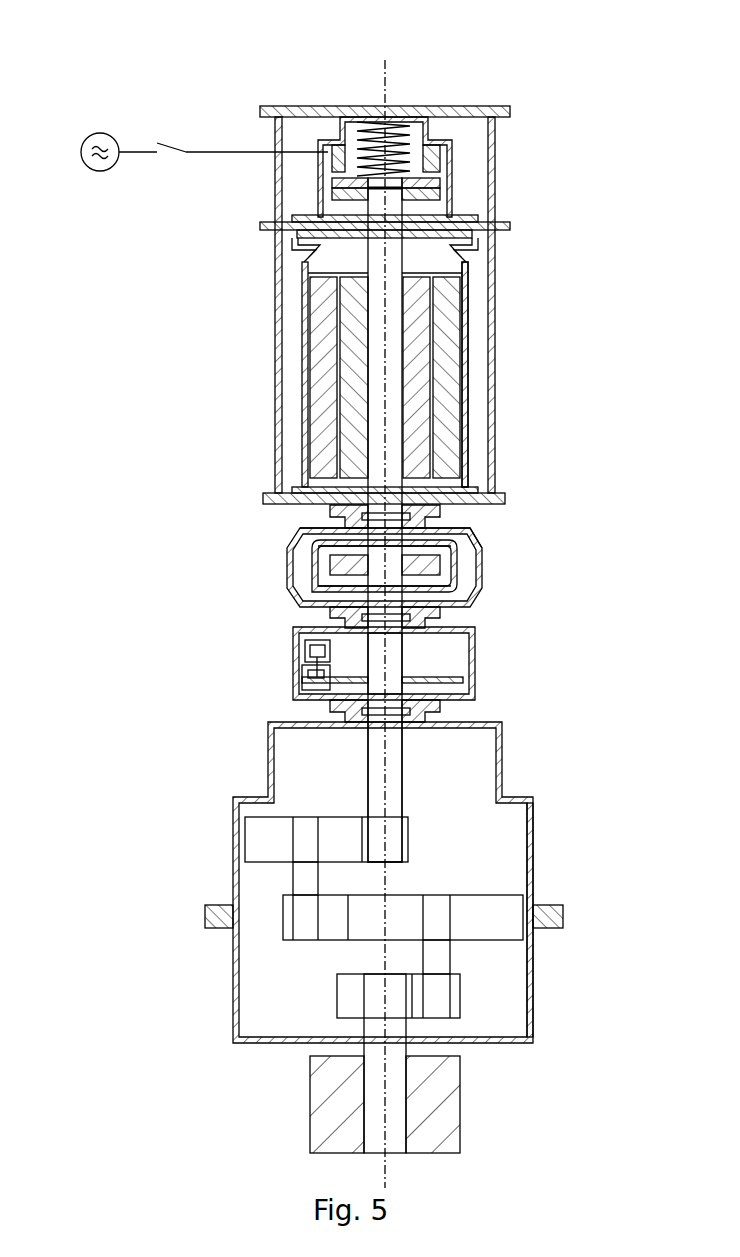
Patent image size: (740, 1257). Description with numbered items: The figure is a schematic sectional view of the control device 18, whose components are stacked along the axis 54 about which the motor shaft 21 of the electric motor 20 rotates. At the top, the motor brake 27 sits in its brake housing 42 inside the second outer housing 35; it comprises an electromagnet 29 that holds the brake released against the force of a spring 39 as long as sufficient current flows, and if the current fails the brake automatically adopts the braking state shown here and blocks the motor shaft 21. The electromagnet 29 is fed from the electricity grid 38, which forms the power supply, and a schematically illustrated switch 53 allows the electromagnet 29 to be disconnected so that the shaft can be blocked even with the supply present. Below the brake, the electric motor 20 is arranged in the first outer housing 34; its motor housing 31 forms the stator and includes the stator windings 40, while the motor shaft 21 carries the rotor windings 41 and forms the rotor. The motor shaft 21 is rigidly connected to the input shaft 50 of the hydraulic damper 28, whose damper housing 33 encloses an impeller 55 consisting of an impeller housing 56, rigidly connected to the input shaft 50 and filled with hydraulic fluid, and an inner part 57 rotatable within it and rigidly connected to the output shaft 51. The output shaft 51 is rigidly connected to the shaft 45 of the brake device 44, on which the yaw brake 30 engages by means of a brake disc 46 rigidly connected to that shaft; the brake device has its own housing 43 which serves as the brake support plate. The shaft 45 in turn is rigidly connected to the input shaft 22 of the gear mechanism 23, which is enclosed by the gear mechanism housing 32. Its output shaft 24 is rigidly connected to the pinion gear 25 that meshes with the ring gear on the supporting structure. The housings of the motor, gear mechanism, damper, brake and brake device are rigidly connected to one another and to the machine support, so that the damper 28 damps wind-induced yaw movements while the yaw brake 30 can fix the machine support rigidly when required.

The control device 18 is at (262, 68).
The electric motor 20 is at (468, 305).
The motor shaft 21 is at (393, 262).
The input shaft 22 is at (375, 752).
The gear mechanism 23 is at (538, 806).
The output shaft 24 is at (371, 1026).
The pinion gear 25 is at (452, 1102).
The motor brake 27 is at (467, 188).
The hydraulic damper 28 is at (487, 563).
The electromagnet 29 is at (340, 163).
The yaw brake 30 is at (456, 645).
The motor housing 31 is at (470, 410).
The gear mechanism housing 32 is at (535, 867).
The damper housing 33 is at (478, 530).
The first outer housing 34 is at (278, 340).
The second outer housing 35 is at (278, 200).
The electricity grid 38 is at (101, 172).
The spring 39 is at (362, 130).
The stator windings 40 is at (455, 447).
The rotor windings 41 is at (345, 443).
The brake housing 42 is at (450, 166).
The housing 43 is at (296, 638).
The brake device 44 is at (292, 672).
The shaft 45 is at (400, 658).
The brake disc 46 is at (457, 686).
The input shaft 50 is at (375, 537).
The output shaft 51 is at (375, 598).
The switch 53 is at (172, 140).
The axis 54 is at (393, 76).
The impeller 55 is at (310, 565).
The impeller housing 56 is at (457, 582).
The inner part 57 is at (480, 553).